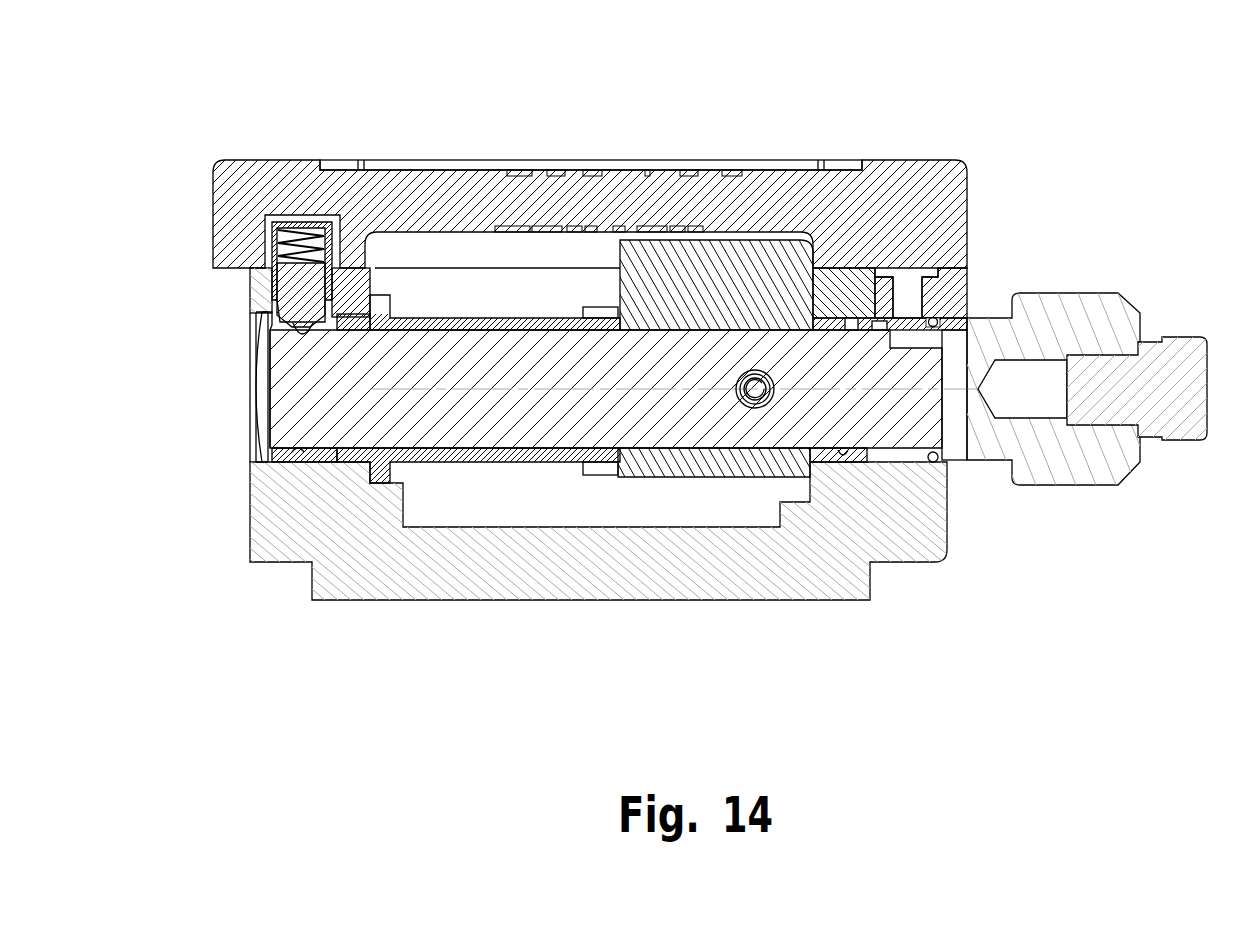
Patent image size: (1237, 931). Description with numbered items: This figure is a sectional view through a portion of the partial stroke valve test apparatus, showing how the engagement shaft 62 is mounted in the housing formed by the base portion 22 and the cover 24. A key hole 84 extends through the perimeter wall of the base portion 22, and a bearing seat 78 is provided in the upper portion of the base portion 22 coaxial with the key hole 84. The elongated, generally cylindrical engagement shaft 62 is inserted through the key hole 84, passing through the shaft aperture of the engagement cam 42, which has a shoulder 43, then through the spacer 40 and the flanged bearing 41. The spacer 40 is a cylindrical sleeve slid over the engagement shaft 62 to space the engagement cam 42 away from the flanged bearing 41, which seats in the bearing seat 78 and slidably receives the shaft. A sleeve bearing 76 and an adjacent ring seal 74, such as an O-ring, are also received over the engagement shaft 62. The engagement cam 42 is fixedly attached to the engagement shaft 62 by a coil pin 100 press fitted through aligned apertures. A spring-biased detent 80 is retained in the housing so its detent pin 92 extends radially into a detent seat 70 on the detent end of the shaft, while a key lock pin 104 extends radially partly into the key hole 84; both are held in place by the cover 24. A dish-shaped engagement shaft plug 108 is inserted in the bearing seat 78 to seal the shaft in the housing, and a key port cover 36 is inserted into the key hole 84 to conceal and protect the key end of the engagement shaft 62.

The base portion 22 is at (468, 592).
The cover 24 is at (232, 178).
The key port cover 36 is at (1080, 478).
The spacer 40 is at (420, 325).
The flanged bearing 41 is at (382, 298).
The engagement cam 42 is at (762, 470).
The shoulder 43 is at (708, 270).
The engagement shaft 62 is at (640, 425).
The detent seat 70 is at (280, 360).
The ring seal 74 is at (851, 330).
The sleeve bearing 76 is at (823, 330).
The bearing seat 78 is at (312, 460).
The detent 80 is at (293, 222).
The key hole 84 is at (900, 457).
The detent pin 92 is at (300, 332).
The coil pin 100 is at (770, 405).
The key lock pin 104 is at (912, 282).
The engagement shaft plug 108 is at (260, 462).